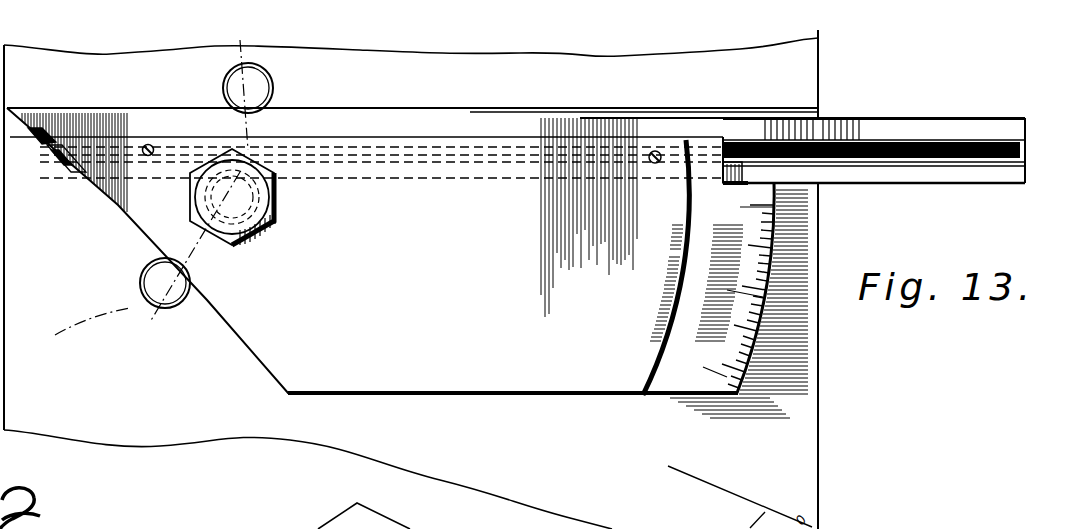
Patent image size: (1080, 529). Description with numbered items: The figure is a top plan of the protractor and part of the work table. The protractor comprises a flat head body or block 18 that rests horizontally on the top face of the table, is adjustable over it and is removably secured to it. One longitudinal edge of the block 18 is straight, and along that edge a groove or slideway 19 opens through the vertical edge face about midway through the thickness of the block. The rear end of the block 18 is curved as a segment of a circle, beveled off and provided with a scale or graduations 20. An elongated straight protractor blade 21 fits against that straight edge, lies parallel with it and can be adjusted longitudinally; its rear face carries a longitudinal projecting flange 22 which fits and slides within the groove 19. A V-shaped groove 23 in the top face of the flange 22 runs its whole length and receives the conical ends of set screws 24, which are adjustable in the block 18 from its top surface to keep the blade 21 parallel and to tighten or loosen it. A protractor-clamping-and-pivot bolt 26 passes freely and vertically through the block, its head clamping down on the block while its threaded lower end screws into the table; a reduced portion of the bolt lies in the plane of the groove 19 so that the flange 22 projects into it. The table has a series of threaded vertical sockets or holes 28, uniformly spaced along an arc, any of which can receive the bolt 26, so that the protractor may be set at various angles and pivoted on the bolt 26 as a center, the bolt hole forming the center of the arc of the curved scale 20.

The flat head body or block 18 is at (412, 229).
The groove or slideway 19 is at (723, 184).
The scale or graduations 20 is at (723, 377).
The protractor blade 21 is at (502, 118).
The longitudinal projecting flange 22 is at (76, 172).
The V-shaped groove 23 is at (42, 148).
The set screws 24 is at (149, 157).
The protractor-clamping-and-pivot bolt 26 is at (252, 205).
The threaded vertical sockets or holes 28 is at (262, 92).